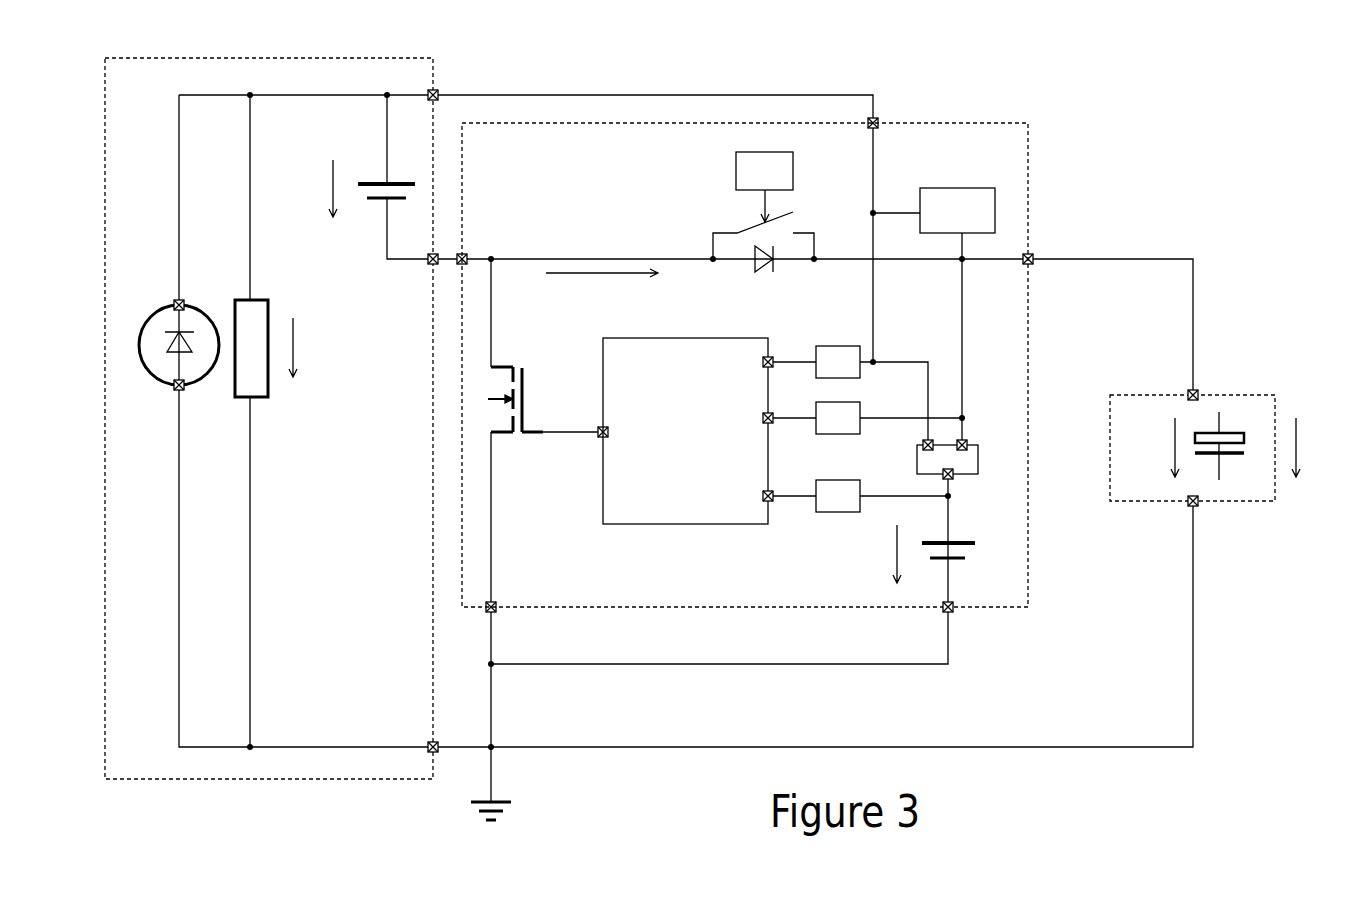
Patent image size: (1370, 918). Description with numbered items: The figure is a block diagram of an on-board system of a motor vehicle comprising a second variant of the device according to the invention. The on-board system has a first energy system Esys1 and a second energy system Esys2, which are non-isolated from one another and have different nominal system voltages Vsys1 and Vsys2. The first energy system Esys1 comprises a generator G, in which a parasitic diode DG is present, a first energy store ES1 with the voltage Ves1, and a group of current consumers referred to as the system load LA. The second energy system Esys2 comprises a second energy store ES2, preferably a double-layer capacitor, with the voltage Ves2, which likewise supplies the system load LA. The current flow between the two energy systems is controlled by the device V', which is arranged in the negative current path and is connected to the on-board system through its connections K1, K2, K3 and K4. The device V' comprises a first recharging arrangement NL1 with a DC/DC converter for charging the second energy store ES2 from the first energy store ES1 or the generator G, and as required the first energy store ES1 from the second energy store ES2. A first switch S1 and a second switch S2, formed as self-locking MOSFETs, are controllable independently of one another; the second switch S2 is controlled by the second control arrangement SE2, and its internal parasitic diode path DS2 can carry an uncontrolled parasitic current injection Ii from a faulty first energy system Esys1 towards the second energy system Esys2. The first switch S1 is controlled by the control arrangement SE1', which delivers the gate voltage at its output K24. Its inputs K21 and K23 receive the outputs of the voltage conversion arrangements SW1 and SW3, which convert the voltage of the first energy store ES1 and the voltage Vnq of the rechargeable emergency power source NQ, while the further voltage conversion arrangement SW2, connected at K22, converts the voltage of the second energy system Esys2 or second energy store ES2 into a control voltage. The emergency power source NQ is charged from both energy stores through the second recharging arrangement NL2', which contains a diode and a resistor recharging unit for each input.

The first energy system Esys1 is at (275, 407).
The second energy system Esys2 is at (1194, 440).
The generator G is at (179, 343).
The parasitic diode in the generator DG is at (188, 354).
The system load LA is at (251, 348).
The first energy store ES1 is at (383, 180).
The second energy store ES2 is at (1214, 446).
The voltage of the first energy store Ves1 is at (313, 188).
The voltage of the second energy store Ves2 is at (1155, 447).
The system voltage of the first energy system Vsys1 is at (318, 347).
The system voltage of the second energy system Vsys2 is at (1321, 447).
The connection of the device K1 is at (464, 248).
The connection of the device K2 is at (480, 616).
The connection of the device K3 is at (1040, 250).
The connection of the device K4 is at (884, 113).
The signal input of the control arrangement K21 is at (789, 354).
The connection of the control arrangement K22 is at (789, 410).
The signal input of the control arrangement K23 is at (789, 489).
The output of the control arrangement K24 is at (591, 440).
The device V' is at (746, 357).
The parasitic current injection Ii is at (602, 281).
The second control arrangement SE2 is at (764, 187).
The second switch S2 is at (760, 235).
The parasitic diode path in the second switch DS2 is at (763, 273).
The first recharging arrangement NL1 is at (934, 316).
The second recharging arrangement NL2' is at (947, 459).
The first switch S1 is at (536, 400).
The control arrangement SE1' is at (685, 431).
The voltage conversion arrangement SW1 is at (872, 395).
The voltage conversion arrangement SW2 is at (889, 418).
The voltage conversion arrangement SW3 is at (882, 496).
The emergency power source NQ is at (944, 540).
The voltage of the emergency power source Vnq is at (876, 554).